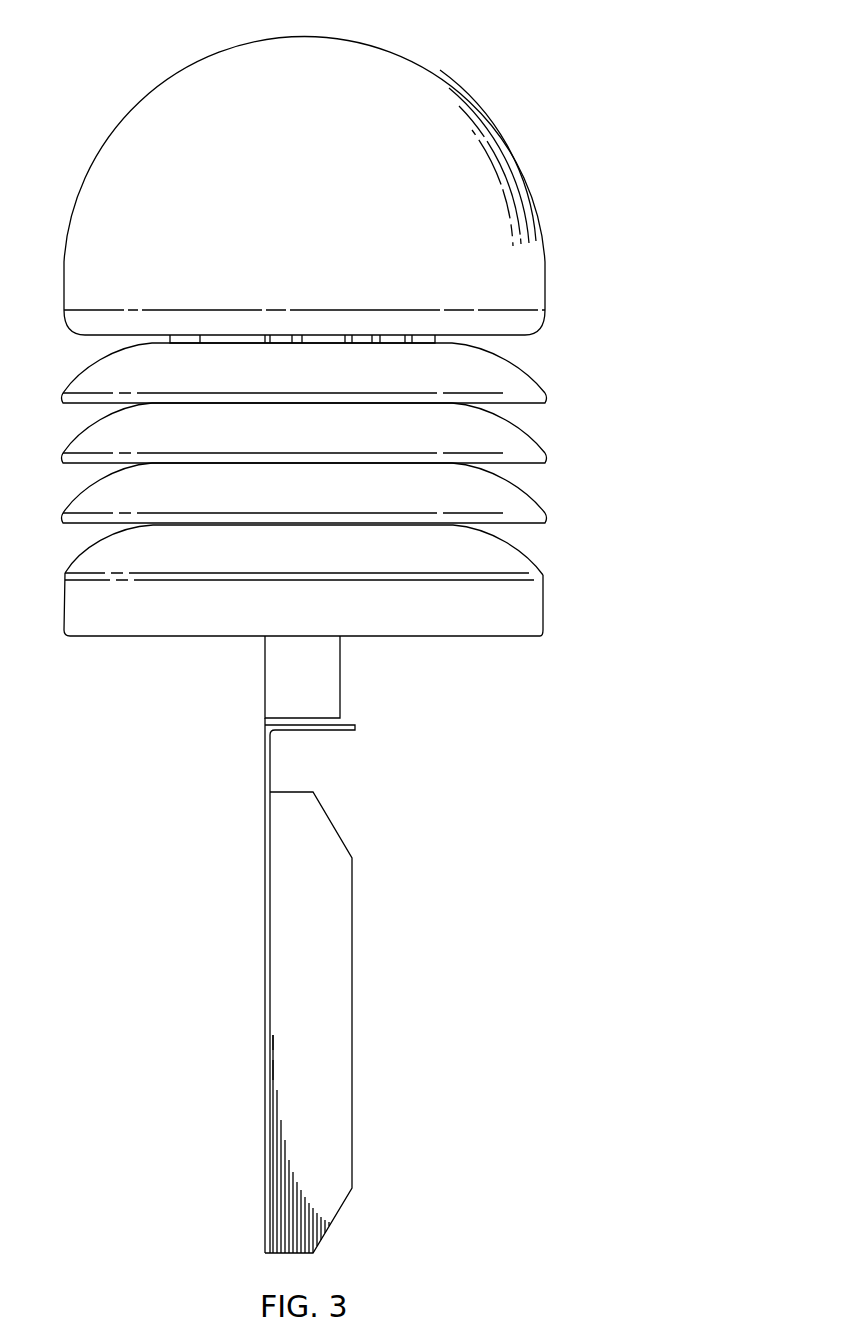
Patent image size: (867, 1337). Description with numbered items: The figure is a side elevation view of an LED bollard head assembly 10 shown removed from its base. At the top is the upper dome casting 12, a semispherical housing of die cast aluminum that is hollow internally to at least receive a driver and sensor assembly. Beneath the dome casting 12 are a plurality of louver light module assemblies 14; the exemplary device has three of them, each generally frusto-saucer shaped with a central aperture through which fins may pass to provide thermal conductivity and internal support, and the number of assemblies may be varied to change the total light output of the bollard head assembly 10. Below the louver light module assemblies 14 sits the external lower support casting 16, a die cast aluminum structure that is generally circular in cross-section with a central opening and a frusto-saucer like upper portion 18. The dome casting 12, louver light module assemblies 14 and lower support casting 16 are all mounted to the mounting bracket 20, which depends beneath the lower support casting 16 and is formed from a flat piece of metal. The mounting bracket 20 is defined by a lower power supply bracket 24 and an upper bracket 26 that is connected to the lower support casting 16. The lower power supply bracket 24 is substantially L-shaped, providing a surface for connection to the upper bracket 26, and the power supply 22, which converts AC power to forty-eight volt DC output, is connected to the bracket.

The bollard head assembly 10 is at (612, 48).
The upper dome casting 12 is at (545, 233).
The louver light module assemblies 14 is at (542, 372).
The lower support casting 16 is at (376, 582).
The frusto-saucer like upper portion 18 is at (516, 562).
The mounting bracket 20 is at (379, 985).
The power supply 22 is at (338, 1036).
The lower power supply bracket 24 is at (263, 858).
The upper bracket 26 is at (330, 672).